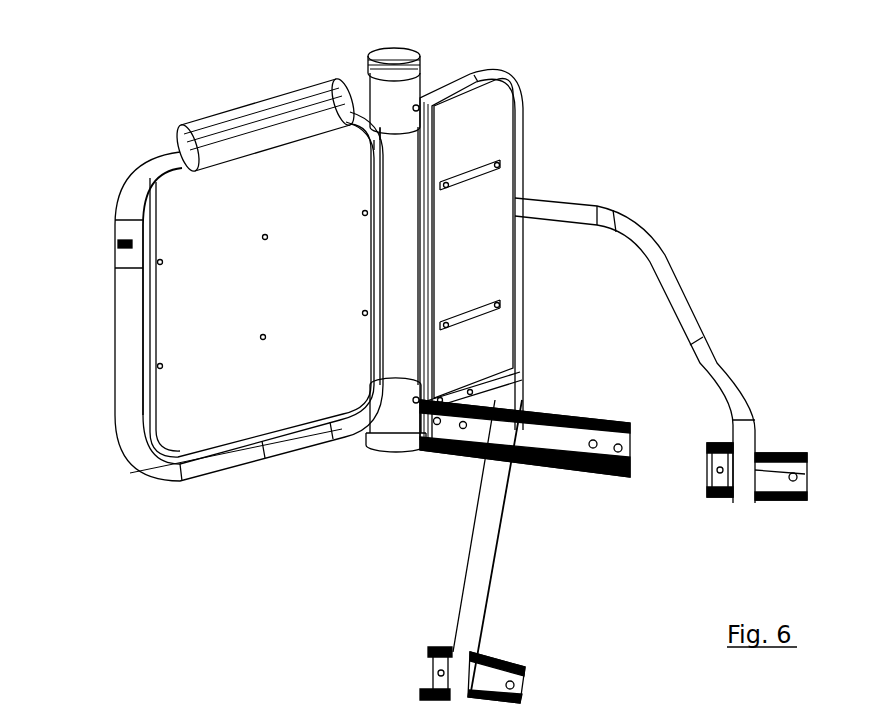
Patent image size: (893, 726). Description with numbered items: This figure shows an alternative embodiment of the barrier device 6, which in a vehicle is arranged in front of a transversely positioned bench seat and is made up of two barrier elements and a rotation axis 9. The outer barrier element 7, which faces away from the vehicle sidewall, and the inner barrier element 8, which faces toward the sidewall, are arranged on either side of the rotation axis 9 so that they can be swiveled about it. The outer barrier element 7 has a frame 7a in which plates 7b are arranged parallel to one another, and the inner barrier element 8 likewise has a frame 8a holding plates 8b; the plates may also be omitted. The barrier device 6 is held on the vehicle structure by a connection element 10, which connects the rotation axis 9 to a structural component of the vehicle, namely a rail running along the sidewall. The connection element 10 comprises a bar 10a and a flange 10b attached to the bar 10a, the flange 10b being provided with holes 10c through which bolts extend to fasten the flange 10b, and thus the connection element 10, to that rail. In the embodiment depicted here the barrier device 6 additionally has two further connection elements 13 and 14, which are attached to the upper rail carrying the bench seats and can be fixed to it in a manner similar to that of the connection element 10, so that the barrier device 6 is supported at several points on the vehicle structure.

The barrier device 6 is at (362, 68).
The outer barrier element 7 is at (215, 131).
The frame 7a is at (145, 172).
The plates 7b is at (283, 291).
The inner barrier element 8 is at (517, 86).
The frame 8a is at (522, 101).
The plates 8b is at (482, 247).
The rotation axis 9 is at (348, 94).
The connection element 10 is at (482, 581).
The bar 10a is at (500, 546).
The flange 10b is at (525, 677).
The holes 10c is at (443, 677).
The connection element 13 is at (697, 292).
The connection element 14 is at (573, 415).